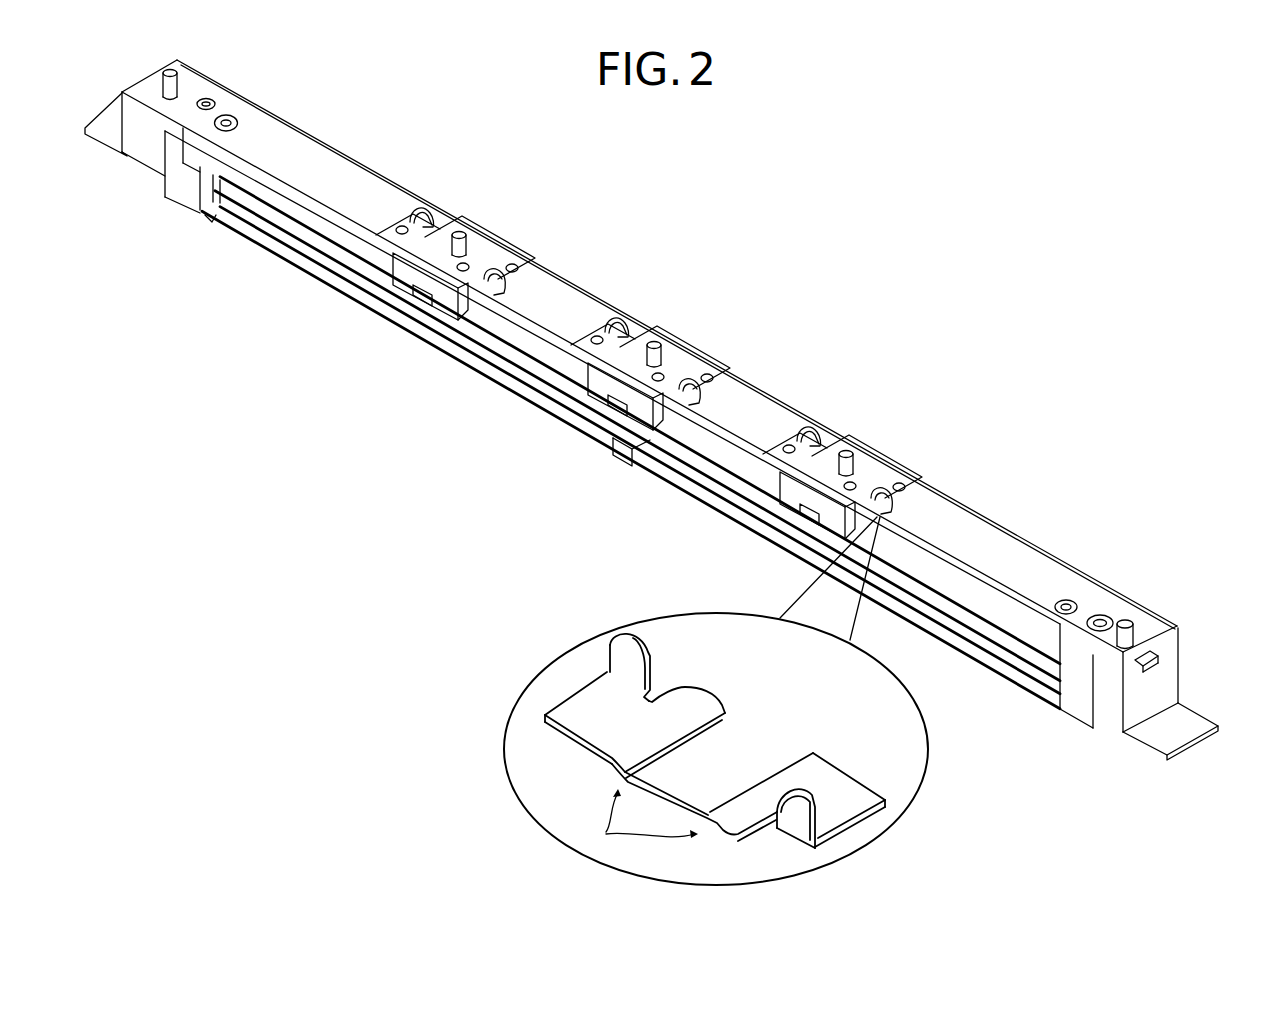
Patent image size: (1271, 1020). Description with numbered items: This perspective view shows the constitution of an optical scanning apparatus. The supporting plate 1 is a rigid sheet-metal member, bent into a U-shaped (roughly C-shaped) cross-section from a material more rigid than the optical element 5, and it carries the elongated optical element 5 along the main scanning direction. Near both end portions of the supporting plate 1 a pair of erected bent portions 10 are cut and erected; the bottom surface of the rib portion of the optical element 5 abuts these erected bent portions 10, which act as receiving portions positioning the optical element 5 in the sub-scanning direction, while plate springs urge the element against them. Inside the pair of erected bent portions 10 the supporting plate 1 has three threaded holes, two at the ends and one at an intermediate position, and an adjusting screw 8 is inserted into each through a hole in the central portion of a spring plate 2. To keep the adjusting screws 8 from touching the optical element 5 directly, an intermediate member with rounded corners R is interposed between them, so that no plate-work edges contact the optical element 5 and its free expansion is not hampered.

The supporting plate 1 is at (320, 153).
The spring plate 2 is at (680, 350).
The optical element 5 is at (367, 297).
The adjusting screw 8 is at (853, 448).
The erected bent portion 10 is at (1057, 602).